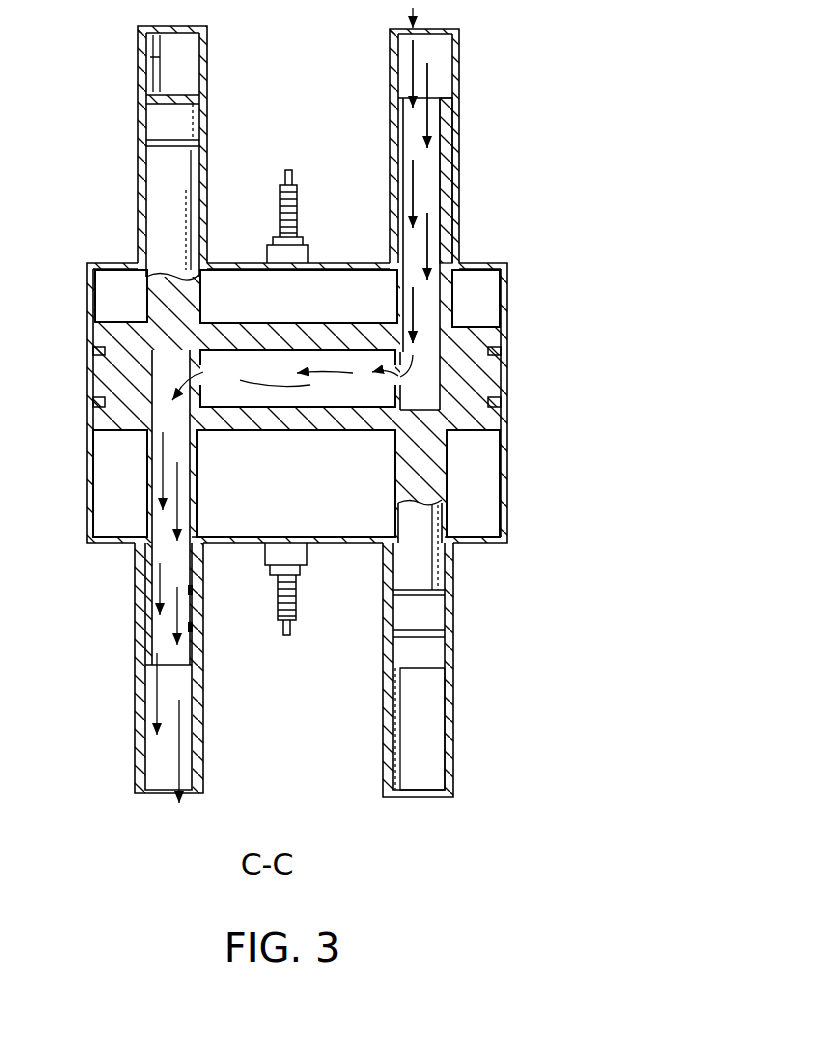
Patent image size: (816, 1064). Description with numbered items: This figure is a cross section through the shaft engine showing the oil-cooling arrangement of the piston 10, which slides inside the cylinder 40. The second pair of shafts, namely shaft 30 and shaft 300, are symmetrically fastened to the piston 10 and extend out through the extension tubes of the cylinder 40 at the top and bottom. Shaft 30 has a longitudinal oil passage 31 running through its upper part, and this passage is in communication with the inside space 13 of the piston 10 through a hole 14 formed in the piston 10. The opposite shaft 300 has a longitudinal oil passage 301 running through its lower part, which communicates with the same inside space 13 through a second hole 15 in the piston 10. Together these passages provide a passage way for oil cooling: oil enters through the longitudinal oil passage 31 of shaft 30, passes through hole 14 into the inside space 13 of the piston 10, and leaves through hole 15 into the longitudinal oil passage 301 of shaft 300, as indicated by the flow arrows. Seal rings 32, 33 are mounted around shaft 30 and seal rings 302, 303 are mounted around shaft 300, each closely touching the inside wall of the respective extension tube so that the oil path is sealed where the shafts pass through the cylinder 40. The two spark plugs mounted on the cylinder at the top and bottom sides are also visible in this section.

The piston 10 is at (403, 380).
The inside space of the piston 13 is at (313, 365).
The hole on the piston 14 is at (463, 337).
The hole on the piston 15 is at (100, 312).
The shaft 30 is at (420, 557).
The longitudinal oil passage 31 is at (428, 198).
The seal ring 32 is at (447, 104).
The seal ring 33 is at (447, 150).
The cylinder 40 is at (508, 273).
The shaft 300 is at (163, 195).
The longitudinal oil passage 301 is at (160, 540).
The seal ring 302 is at (193, 590).
The seal ring 303 is at (193, 627).